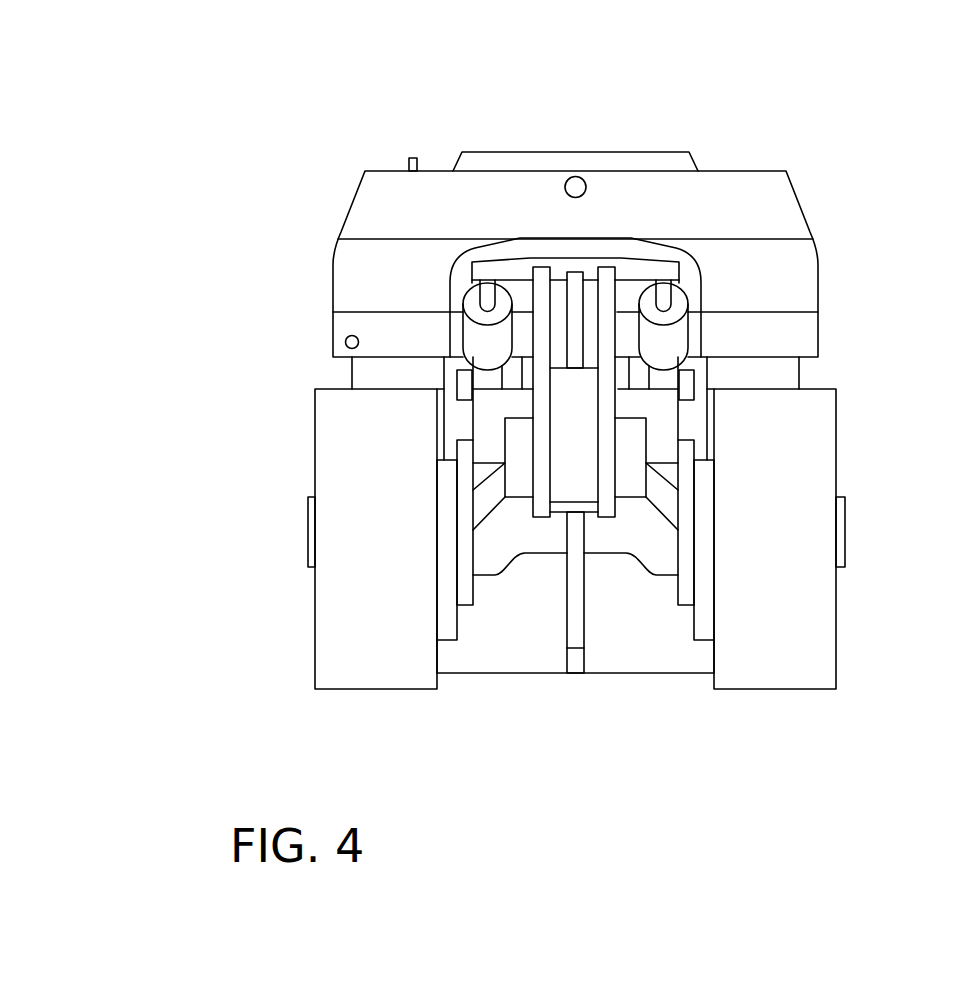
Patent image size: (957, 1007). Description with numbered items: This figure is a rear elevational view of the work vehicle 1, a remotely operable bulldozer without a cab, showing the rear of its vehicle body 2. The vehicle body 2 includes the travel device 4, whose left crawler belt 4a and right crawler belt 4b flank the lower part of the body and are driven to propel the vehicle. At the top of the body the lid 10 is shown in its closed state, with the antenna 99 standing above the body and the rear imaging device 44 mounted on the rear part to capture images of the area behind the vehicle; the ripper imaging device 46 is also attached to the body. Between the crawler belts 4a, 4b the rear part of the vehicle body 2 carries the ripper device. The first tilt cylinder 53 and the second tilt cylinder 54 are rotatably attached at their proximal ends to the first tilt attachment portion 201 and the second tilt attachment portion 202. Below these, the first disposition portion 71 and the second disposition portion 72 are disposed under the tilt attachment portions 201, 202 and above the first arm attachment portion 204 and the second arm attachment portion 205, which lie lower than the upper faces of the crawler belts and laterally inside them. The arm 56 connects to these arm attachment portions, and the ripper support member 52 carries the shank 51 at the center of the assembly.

The work vehicle 1 is at (396, 126).
The vehicle body 2 is at (730, 152).
The antenna 99 is at (411, 157).
The lid 10 is at (488, 151).
The rear imaging device 44 is at (574, 176).
The ripper imaging device 46 is at (345, 340).
The first tilt cylinder 53 is at (485, 342).
The second tilt cylinder 54 is at (666, 342).
The first tilt attachment portion 201 is at (463, 377).
The second tilt attachment portion 202 is at (690, 377).
The first disposition portion 71 is at (493, 427).
The second disposition portion 72 is at (658, 427).
The ripper support member 52 is at (605, 463).
The arm 56 is at (603, 543).
The shank 51 is at (575, 630).
The first arm attachment portion 204 is at (473, 553).
The second arm attachment portion 205 is at (680, 557).
The travel device 4 is at (546, 539).
The crawler belt 4a is at (333, 617).
The crawler belt 4b is at (818, 617).